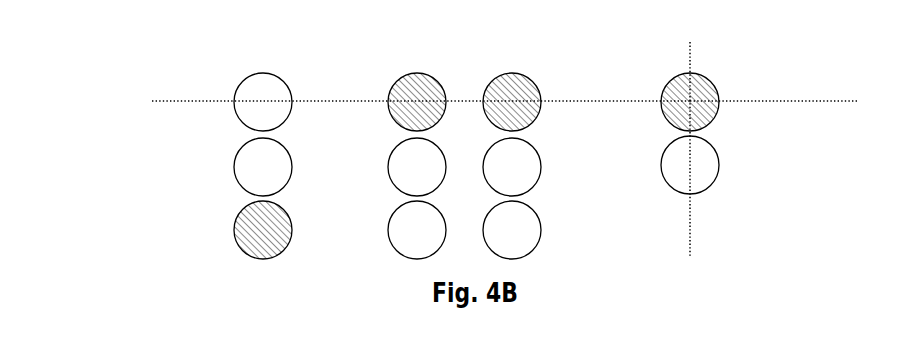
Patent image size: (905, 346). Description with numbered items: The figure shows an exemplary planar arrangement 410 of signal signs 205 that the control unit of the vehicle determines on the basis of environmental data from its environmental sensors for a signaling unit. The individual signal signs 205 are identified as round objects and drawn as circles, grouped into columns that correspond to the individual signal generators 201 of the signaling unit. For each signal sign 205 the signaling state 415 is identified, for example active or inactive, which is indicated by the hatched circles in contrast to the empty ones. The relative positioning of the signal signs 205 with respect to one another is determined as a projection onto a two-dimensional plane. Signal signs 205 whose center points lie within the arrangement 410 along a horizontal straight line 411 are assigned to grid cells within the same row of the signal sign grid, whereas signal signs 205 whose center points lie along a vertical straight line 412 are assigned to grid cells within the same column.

The signal generator 201 is at (415, 55).
The signal sign 205 is at (233, 233).
The arrangement of signal signs 410 is at (117, 105).
The horizontal straight line 411 is at (817, 100).
The vertical straight line 412 is at (688, 250).
The signaling state 415 is at (390, 98).